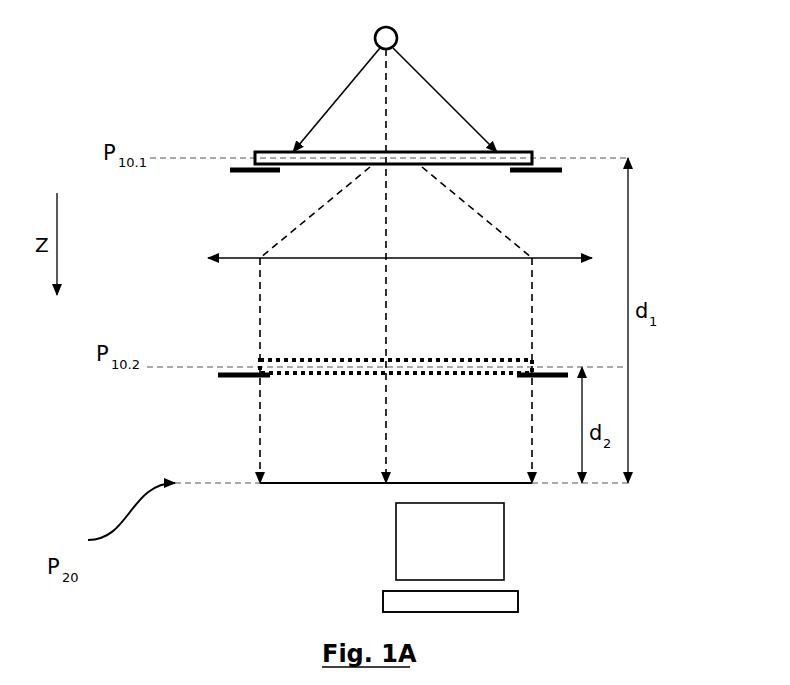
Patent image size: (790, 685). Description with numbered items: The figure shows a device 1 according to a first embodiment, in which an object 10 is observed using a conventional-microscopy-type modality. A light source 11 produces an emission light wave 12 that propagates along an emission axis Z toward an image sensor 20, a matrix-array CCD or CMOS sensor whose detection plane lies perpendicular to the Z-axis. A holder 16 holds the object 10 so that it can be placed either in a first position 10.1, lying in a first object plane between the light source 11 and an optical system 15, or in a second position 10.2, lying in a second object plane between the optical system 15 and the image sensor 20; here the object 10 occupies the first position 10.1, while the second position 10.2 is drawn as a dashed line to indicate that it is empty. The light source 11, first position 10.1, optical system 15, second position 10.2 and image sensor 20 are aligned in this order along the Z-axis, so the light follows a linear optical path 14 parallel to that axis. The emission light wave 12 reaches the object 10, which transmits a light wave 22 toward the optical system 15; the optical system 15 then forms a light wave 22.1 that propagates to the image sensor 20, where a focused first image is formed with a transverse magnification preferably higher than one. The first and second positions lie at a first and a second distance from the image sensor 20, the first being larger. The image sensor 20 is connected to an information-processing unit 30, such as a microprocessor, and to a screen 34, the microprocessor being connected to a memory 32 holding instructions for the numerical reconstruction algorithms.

The device 1 is at (162, 72).
The object 10 is at (536, 158).
The first position 10.1 is at (250, 158).
The second position 10.2 is at (250, 362).
The light source 11 is at (360, 43).
The emission light wave 12 is at (437, 92).
The optical path 14 is at (386, 213).
The optical system 15 is at (248, 264).
The holder 16 is at (531, 172).
The image sensor 20 is at (552, 483).
The light wave 22 is at (458, 193).
The light wave 22.1 is at (532, 272).
The information-processing unit 30 is at (495, 598).
The memory 32 is at (450, 601).
The screen 34 is at (505, 540).